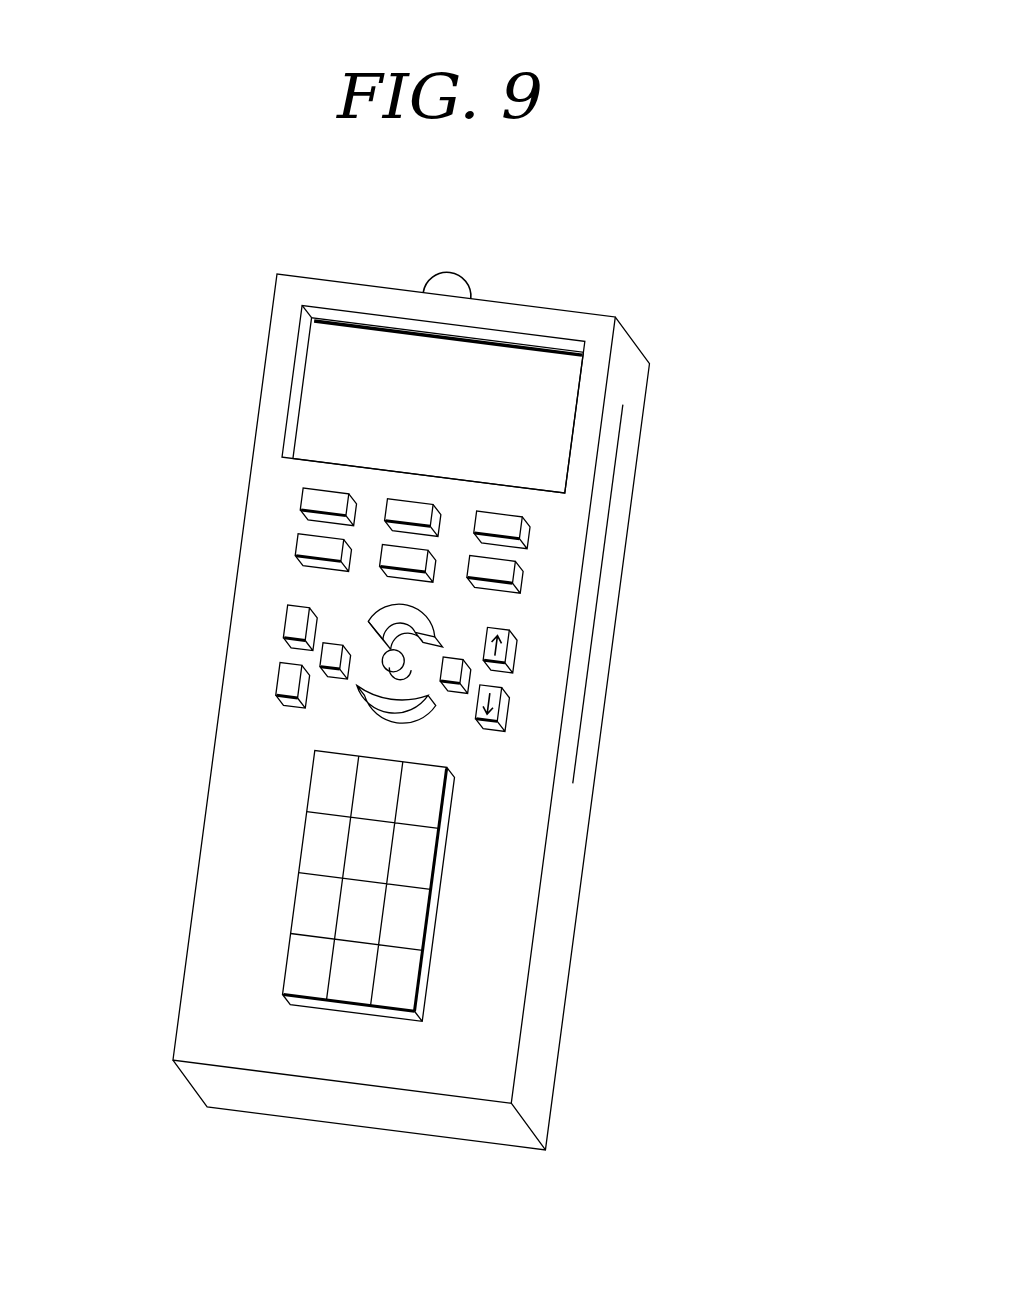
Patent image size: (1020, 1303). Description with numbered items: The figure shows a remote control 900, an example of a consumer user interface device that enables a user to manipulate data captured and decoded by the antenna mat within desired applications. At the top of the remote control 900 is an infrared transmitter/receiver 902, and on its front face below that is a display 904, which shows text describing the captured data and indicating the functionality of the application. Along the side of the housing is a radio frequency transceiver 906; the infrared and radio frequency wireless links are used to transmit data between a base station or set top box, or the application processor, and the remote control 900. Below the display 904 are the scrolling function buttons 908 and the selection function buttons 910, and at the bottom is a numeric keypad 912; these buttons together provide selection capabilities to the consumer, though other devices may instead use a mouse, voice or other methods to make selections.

The remote control 900 is at (207, 397).
The infrared transmitter/receiver 902 is at (447, 271).
The display 904 is at (557, 376).
The radio frequency transceiver 906 is at (618, 473).
The scrolling function buttons 908 is at (515, 663).
The selection function buttons 910 is at (383, 660).
The numeric keypad 912 is at (442, 838).